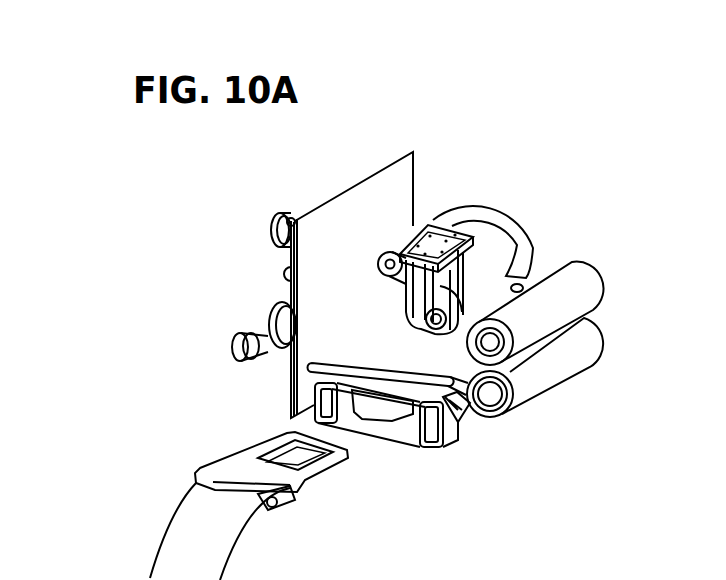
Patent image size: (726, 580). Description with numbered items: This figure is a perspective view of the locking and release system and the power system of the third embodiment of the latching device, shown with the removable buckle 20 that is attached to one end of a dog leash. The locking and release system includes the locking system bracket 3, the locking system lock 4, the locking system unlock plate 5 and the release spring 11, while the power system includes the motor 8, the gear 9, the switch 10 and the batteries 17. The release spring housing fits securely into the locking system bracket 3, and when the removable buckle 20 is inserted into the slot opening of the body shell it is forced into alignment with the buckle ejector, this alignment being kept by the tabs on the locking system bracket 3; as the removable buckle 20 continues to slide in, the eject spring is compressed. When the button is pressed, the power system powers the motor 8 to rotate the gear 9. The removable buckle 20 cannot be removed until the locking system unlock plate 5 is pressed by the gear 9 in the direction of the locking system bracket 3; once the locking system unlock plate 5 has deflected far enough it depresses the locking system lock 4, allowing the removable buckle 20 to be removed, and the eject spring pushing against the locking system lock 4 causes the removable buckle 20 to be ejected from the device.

The locking system bracket 3 is at (454, 447).
The locking system lock 4 is at (385, 414).
The locking system unlock plate 5 is at (469, 422).
The motor 8 is at (484, 225).
The gear 9 is at (466, 308).
The switch 10 is at (428, 223).
The release spring 11 is at (423, 418).
The batteries 17 is at (582, 276).
The removable buckle 20 is at (324, 483).